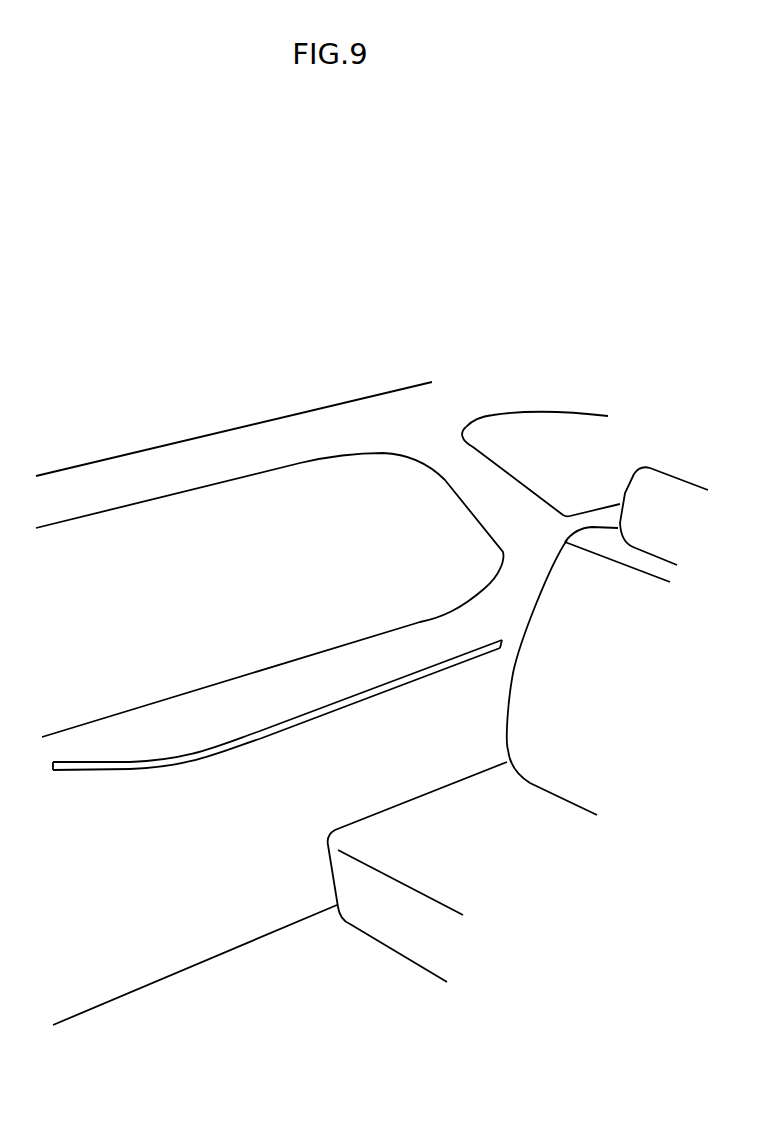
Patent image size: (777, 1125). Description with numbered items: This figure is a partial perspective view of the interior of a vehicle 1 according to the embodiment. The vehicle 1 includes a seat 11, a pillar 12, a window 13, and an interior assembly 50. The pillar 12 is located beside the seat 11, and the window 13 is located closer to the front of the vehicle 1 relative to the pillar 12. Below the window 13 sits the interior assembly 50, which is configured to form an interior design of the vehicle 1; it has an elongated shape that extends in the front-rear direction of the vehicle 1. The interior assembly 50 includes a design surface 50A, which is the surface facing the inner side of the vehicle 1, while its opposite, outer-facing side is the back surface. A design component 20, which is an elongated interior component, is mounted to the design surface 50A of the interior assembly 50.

The vehicle 1 is at (107, 427).
The seat 11 is at (603, 673).
The pillar 12 is at (467, 467).
The window 13 is at (315, 528).
The design component 20 is at (98, 768).
The interior assembly 50 is at (162, 903).
The design surface 50A is at (247, 880).